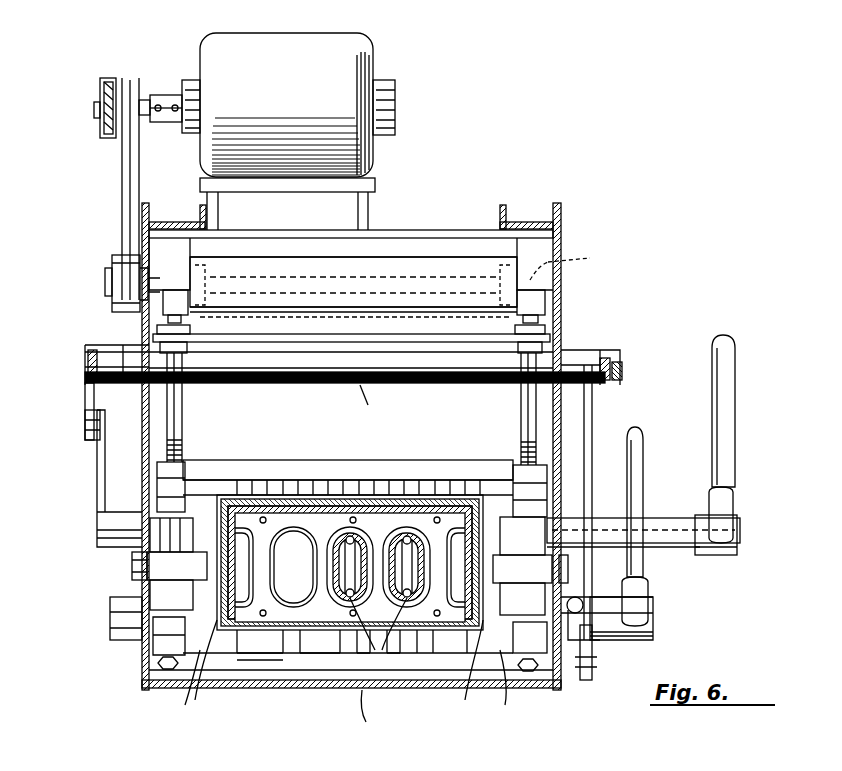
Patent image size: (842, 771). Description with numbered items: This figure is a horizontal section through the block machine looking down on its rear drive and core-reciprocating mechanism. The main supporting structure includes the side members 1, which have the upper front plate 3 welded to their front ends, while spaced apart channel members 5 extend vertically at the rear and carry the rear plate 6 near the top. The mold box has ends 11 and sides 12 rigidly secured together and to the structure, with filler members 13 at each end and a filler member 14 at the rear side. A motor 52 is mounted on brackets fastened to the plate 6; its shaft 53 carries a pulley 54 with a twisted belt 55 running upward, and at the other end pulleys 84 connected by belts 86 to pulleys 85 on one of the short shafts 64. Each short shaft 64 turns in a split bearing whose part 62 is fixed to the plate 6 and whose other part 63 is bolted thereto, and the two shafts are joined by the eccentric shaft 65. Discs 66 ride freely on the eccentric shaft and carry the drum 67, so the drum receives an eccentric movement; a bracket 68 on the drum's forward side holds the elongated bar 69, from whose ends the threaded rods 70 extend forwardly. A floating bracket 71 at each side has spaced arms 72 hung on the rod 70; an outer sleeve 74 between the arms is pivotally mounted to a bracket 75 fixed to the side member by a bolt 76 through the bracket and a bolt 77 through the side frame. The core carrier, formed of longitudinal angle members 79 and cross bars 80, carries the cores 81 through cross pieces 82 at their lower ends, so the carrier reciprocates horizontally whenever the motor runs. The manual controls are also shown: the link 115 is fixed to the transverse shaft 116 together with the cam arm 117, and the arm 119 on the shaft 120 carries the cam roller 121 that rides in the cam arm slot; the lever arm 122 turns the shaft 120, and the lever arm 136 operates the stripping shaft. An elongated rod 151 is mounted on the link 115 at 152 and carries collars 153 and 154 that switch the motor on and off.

The side members 1 is at (143, 472).
The upper front plate 3 is at (368, 716).
The channel members 5 is at (175, 222).
The rear plate 6 is at (440, 232).
The mold box ends 11 is at (349, 690).
The mold box sides 12 is at (308, 480).
The end filler members 13 is at (339, 675).
The rear filler member 14 is at (265, 505).
The motor 52 is at (357, 52).
The motor shaft 53 is at (150, 103).
The pulley 54 is at (98, 125).
The belt 55 is at (109, 80).
The split bearing part 62 is at (175, 245).
The split bearing part 63 is at (170, 303).
The short shaft 64 is at (575, 263).
The eccentric shaft 65 is at (312, 277).
The discs 66 is at (205, 278).
The drum 67 is at (388, 262).
The bracket 68 is at (405, 325).
The elongated bar 69 is at (300, 342).
The rods 70 is at (182, 405).
The floating bracket 71 is at (158, 665).
The arms 72 is at (185, 498).
The outer sleeve 74 is at (155, 527).
The bracket 75 is at (165, 567).
The bolt 76 is at (260, 567).
The bolt 77 is at (132, 560).
The longitudinal angle member 79 is at (445, 478).
The cross bars 80 is at (248, 640).
The cores 81 is at (350, 535).
The cross pieces 82 is at (378, 636).
The pulleys 84 is at (141, 128).
The pulleys 85 is at (105, 283).
The belts 86 is at (124, 185).
The link 115 is at (88, 362).
The horizontal shaft 116 is at (374, 411).
The cam arm 117 is at (85, 400).
The arm 119 is at (97, 470).
The horizontal shaft 120 is at (680, 545).
The cam roller 121 is at (85, 430).
The lever arm 122 is at (720, 425).
The lever arm 136 is at (643, 490).
The elongated rod 151 is at (592, 420).
The rod mounting 152 is at (622, 372).
The collar 153 is at (620, 640).
The collar 154 is at (592, 660).